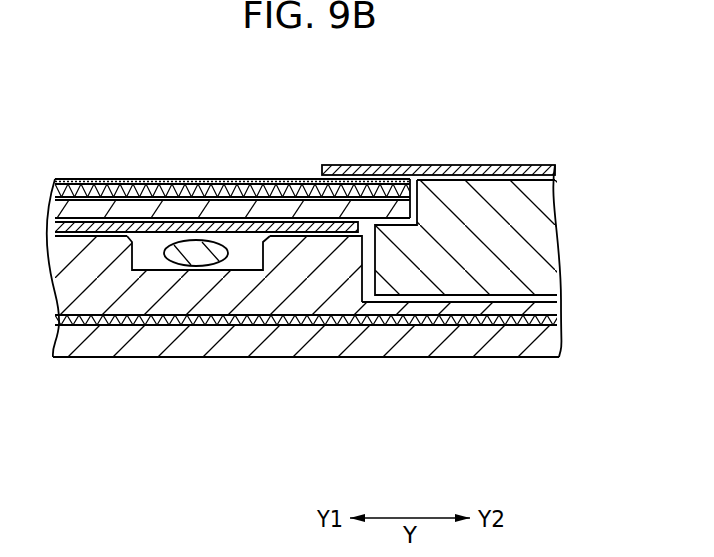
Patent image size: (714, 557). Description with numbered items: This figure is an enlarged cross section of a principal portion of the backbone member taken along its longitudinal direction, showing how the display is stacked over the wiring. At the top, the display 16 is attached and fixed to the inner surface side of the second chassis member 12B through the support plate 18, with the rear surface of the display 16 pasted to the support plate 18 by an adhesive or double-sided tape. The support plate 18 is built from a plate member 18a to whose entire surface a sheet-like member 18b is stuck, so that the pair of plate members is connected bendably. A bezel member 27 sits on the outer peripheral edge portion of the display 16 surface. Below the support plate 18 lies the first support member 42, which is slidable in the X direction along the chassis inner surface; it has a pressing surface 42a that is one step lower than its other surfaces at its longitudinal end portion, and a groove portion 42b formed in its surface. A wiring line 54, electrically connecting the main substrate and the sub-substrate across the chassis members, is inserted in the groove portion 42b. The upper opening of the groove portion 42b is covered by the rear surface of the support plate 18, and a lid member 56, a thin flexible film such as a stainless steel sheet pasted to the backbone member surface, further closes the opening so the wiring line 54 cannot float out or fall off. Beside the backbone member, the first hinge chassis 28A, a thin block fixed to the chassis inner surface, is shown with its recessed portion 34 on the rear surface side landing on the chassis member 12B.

The display 16 is at (78, 179).
The support plate 18 is at (232, 146).
The plate member 18a is at (197, 213).
The sheet-like member 18b is at (140, 195).
The wiring line 54 is at (212, 250).
The lid member 56 is at (302, 228).
The bezel member 27 is at (377, 166).
The first hinge chassis 28A is at (471, 289).
The first support member 42 is at (306, 278).
The pressing surface 42a is at (392, 286).
The groove portion 42b is at (227, 261).
The second chassis member 12B is at (420, 366).
The recessed portion 34 is at (525, 302).